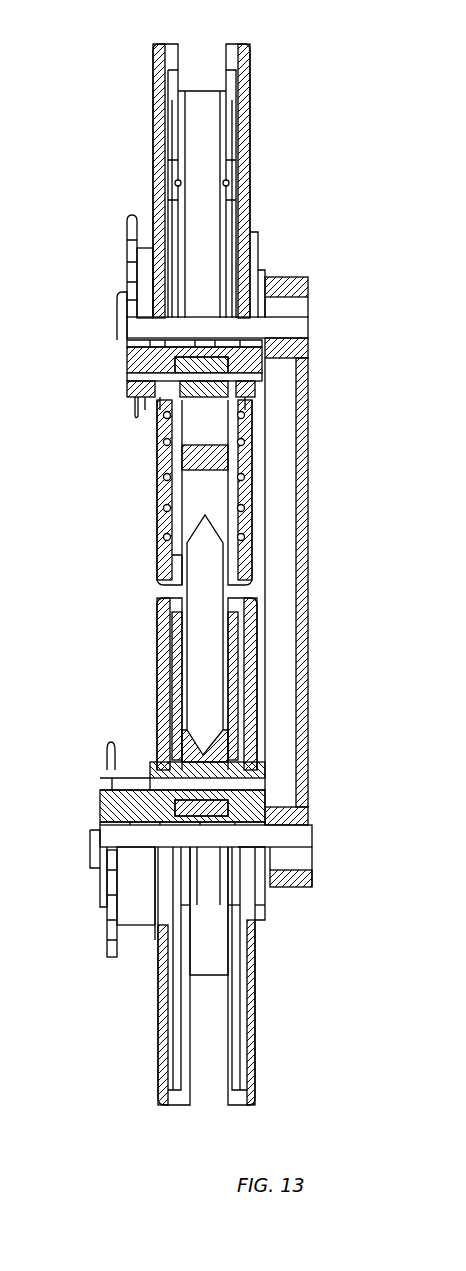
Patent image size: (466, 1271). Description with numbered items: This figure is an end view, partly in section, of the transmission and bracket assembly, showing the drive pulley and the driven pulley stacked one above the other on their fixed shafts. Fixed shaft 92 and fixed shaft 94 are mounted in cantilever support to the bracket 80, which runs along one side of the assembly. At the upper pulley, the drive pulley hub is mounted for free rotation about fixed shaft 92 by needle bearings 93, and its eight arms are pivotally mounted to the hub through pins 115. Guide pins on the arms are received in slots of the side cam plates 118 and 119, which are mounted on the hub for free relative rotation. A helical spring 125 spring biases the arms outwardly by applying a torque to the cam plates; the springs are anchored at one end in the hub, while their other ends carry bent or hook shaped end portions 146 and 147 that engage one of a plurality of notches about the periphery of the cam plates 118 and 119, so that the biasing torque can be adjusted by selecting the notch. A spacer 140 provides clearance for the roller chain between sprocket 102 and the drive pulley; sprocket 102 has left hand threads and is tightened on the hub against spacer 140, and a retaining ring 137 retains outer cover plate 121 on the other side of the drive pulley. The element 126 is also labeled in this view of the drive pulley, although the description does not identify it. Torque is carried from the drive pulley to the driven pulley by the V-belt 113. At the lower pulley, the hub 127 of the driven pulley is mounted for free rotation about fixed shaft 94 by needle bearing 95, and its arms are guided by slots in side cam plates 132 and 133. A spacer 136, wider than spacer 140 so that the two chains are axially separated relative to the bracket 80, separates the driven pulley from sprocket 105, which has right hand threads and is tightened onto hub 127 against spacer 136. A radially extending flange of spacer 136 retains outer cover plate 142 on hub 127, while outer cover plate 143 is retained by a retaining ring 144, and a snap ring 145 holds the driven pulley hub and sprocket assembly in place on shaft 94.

The bracket 80 is at (312, 545).
The fixed shaft 92 is at (290, 330).
The needle bearings 93 is at (128, 345).
The fixed shaft 94 is at (290, 837).
The needle bearing 95 is at (108, 823).
The sprocket 102 is at (130, 282).
The sprocket 105 is at (110, 942).
The V-belt 113 is at (207, 963).
The pins 115 is at (130, 375).
The side cam plate 118 is at (172, 520).
The side cam plate 119 is at (240, 427).
The outer cover plate 121 is at (170, 592).
The helical spring 125 is at (237, 490).
The inner tube ring 126 is at (176, 195).
The hub 127 is at (115, 810).
The side cam plate 132 is at (172, 666).
The side cam plate 133 is at (234, 680).
The spacer 136 is at (137, 955).
The retaining ring 137 is at (258, 232).
The spacer 140 is at (148, 262).
The outer cover plate 142 is at (160, 1072).
The outer cover plate 143 is at (258, 1095).
The retaining ring 144 is at (260, 925).
The snap ring 145 is at (100, 873).
The bent end portion 146 is at (240, 178).
The bent end portion 147 is at (170, 178).